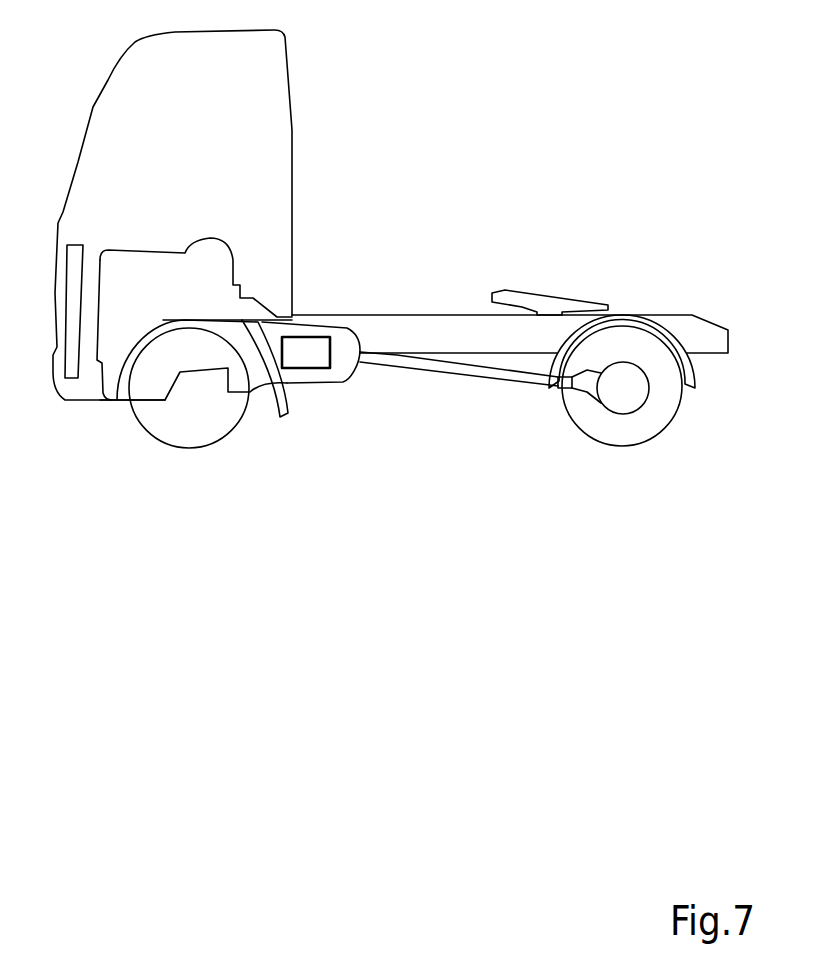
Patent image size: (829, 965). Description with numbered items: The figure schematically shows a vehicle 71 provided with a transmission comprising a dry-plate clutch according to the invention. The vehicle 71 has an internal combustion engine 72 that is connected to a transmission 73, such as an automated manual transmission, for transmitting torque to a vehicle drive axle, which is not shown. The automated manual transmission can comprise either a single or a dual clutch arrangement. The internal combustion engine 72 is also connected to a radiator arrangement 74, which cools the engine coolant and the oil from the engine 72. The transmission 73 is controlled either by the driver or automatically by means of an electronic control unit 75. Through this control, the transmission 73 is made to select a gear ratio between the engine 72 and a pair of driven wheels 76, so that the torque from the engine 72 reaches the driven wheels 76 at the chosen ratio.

The vehicle 71 is at (280, 115).
The internal combustion engine 72 is at (143, 252).
The transmission 73 is at (350, 357).
The radiator arrangement 74 is at (70, 368).
The electronic control unit 75 is at (312, 347).
The driven wheels 76 is at (647, 422).